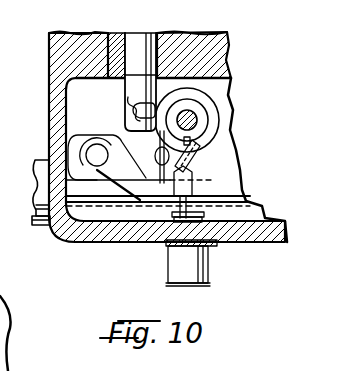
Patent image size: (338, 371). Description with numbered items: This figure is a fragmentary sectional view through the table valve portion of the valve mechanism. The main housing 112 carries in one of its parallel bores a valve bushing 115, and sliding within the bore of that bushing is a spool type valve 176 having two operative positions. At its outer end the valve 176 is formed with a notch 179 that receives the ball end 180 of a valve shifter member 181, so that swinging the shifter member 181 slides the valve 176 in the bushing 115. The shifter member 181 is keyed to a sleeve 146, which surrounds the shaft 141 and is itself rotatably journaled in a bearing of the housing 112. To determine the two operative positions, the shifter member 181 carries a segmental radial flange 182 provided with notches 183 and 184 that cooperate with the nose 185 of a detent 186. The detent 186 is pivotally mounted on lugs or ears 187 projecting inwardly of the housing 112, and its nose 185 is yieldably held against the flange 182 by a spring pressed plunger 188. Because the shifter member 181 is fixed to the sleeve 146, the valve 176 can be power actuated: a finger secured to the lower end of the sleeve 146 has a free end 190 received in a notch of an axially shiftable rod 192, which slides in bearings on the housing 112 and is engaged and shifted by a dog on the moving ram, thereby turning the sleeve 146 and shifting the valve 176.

The housing 112 is at (52, 84).
The valve bushing 115 is at (121, 14).
The spool type valve 176 is at (140, 16).
The ball end 180 is at (127, 102).
The notch 179 is at (133, 112).
The lugs or ears 187 is at (66, 118).
The notch 183 is at (158, 152).
The sleeve 146 is at (193, 107).
The valve shifter member 181 is at (200, 104).
The shaft 141 is at (197, 128).
The notch 184 is at (200, 149).
The segmental radial flange 182 is at (200, 163).
The nose 185 is at (196, 179).
The rod 192 is at (65, 244).
The detent 186 is at (190, 213).
The free end 190 is at (148, 258).
The spring pressed plunger 188 is at (240, 245).